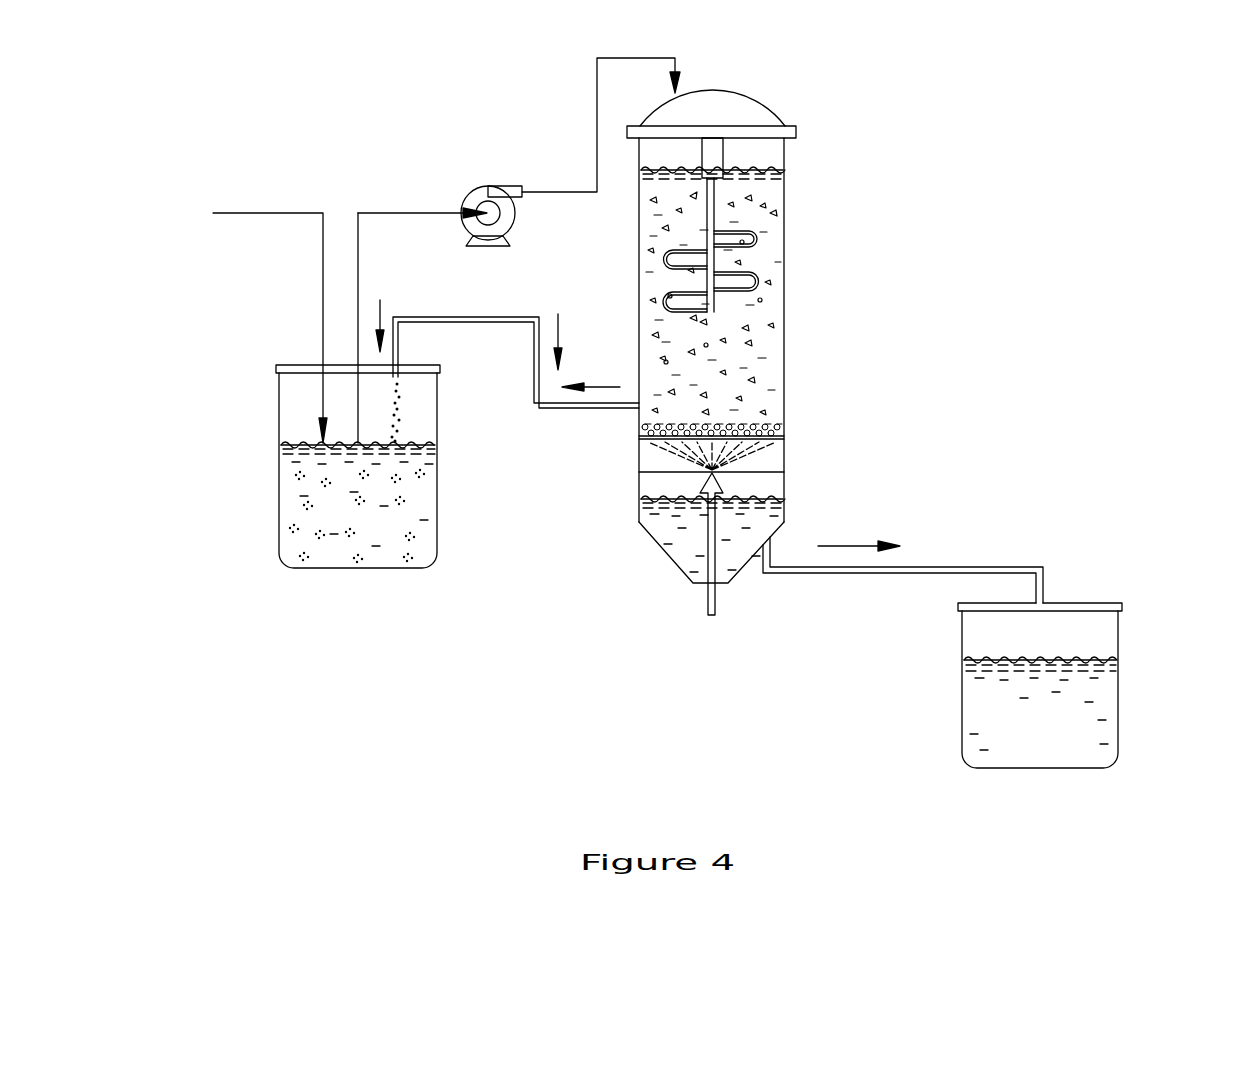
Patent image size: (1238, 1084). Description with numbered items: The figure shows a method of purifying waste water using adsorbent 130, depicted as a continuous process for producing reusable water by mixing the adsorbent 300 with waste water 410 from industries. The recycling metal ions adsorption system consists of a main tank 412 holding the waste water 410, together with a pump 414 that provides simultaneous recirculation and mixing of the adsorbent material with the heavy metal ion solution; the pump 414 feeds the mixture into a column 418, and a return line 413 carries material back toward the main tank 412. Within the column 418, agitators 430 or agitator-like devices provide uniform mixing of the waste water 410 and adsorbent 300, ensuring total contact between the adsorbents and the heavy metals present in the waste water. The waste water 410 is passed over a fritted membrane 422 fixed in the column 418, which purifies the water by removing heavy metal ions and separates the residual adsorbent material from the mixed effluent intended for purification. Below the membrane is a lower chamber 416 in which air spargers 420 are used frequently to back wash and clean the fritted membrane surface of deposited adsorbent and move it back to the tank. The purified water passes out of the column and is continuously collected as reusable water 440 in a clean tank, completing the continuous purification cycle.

The waste water 410 is at (255, 212).
The main tank 412 is at (310, 568).
The return pipe 413 is at (565, 410).
The pump 414 is at (468, 140).
The lower chamber below fritted membrane 416 is at (645, 461).
The column with fritted membrane 418 is at (811, 389).
The air spargers 420 is at (645, 625).
The fritted membrane 422 is at (787, 450).
The agitators 430 is at (760, 239).
The adsorbent 300 is at (774, 215).
The reusable water 440 is at (733, 560).
The adsorbent 130 is at (953, 793).